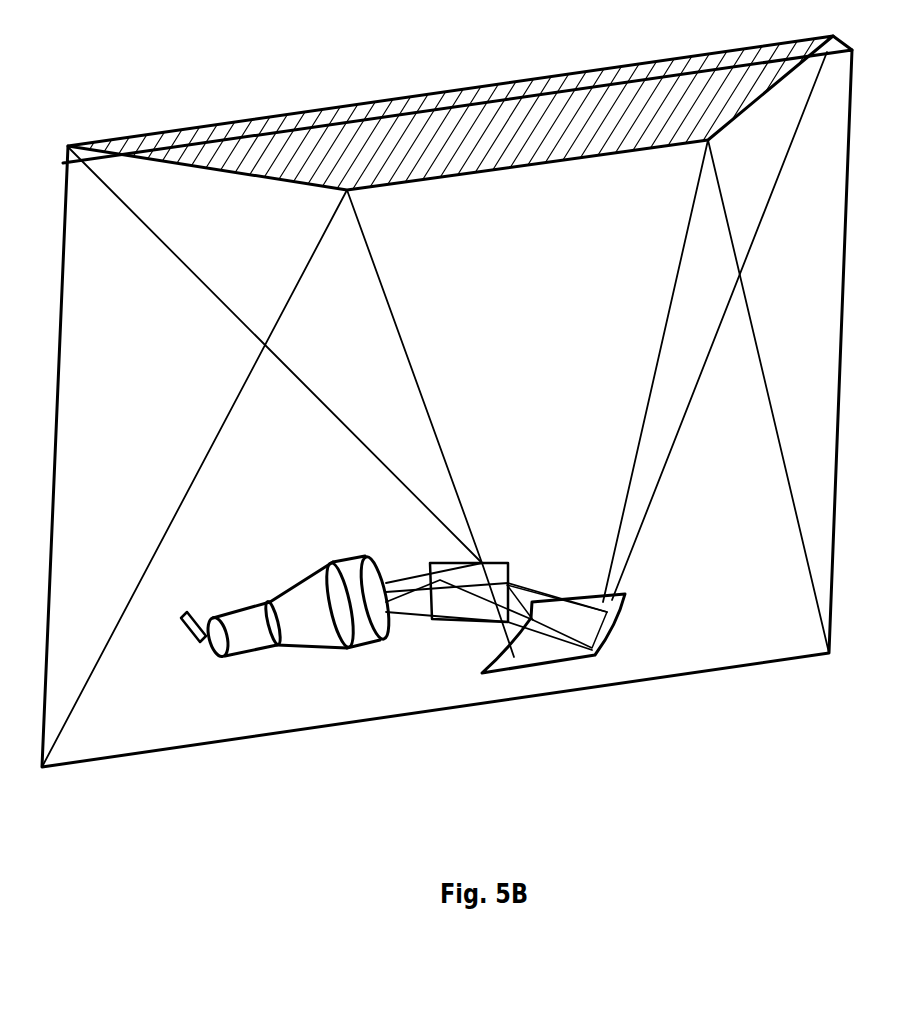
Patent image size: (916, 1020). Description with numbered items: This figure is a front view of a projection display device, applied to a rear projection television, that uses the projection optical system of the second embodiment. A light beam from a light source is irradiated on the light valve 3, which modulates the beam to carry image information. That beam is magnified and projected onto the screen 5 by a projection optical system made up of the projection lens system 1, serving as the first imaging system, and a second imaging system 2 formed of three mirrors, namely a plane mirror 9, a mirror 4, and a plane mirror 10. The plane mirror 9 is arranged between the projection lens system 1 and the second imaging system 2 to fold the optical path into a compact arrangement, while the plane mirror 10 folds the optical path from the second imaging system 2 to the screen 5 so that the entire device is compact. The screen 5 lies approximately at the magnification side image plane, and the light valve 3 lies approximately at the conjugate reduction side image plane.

The projection lens system 1 is at (268, 581).
The second imaging system 2 is at (640, 616).
The light valve 3 is at (193, 635).
The mirror 4 is at (581, 580).
The screen 5 is at (803, 293).
The plane mirror 9 is at (490, 565).
The plane mirror 10 is at (540, 137).